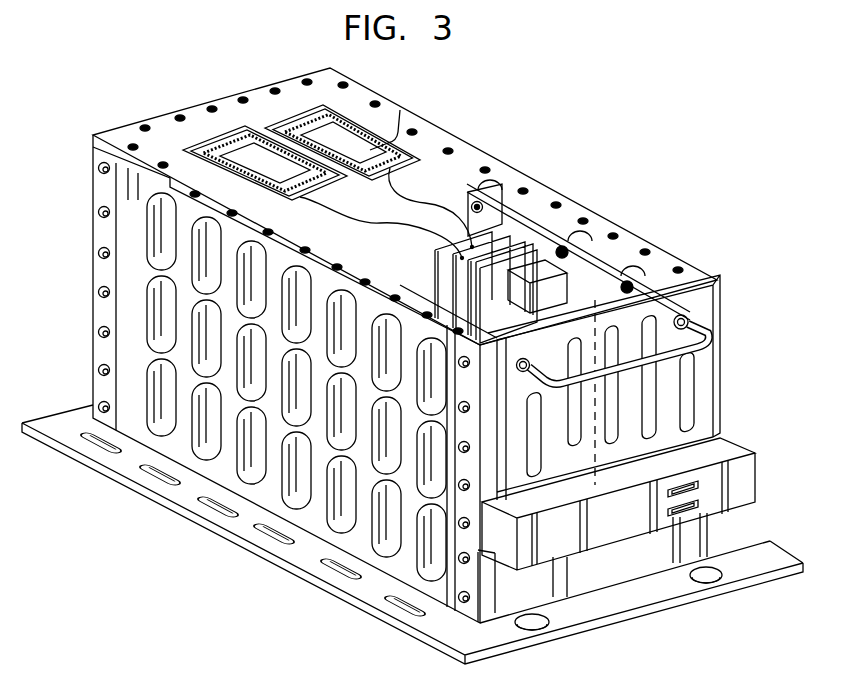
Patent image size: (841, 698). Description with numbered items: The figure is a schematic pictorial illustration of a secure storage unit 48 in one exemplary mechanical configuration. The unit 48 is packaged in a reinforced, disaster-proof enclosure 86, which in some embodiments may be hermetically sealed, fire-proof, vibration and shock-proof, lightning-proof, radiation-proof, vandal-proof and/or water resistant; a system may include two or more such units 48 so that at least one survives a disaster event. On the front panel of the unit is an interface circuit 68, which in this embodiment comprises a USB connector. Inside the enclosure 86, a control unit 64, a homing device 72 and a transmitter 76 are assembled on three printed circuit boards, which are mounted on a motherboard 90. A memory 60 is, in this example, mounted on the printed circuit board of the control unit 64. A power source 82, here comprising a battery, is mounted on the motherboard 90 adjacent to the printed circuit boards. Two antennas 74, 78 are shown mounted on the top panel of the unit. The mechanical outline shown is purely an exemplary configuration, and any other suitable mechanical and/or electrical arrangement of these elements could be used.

The secure storage unit 48 is at (508, 125).
The memory 60 is at (493, 310).
The control unit 64 is at (530, 250).
The interface circuit 68 is at (692, 487).
The homing device 72 is at (527, 252).
The antenna 74 is at (295, 200).
The transmitter 76 is at (443, 277).
The antenna 78 is at (400, 166).
The power source 82 is at (547, 285).
The enclosure 86 is at (705, 302).
The motherboard 90 is at (577, 258).